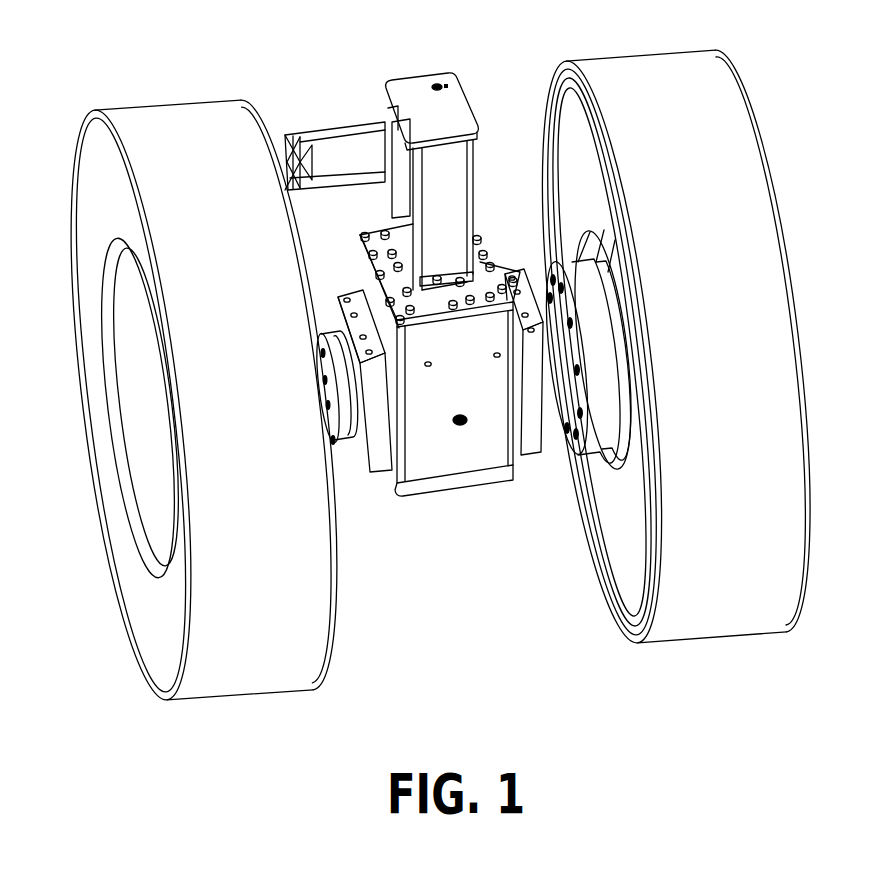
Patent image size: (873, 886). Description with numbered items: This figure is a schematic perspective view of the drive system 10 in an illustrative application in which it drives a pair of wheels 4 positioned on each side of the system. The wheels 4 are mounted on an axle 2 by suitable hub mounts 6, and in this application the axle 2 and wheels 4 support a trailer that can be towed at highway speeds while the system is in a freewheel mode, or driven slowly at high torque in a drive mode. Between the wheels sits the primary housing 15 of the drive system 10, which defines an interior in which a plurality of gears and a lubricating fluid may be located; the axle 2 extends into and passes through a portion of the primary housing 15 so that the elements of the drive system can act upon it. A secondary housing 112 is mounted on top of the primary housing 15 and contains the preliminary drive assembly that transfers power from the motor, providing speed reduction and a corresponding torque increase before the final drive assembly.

The drive system 10 is at (463, 330).
The secondary housing 112 is at (432, 118).
The wheels 4 is at (720, 262).
The axle 2 is at (362, 458).
The primary housing 15 is at (465, 455).
The hub mounts 6 is at (593, 397).